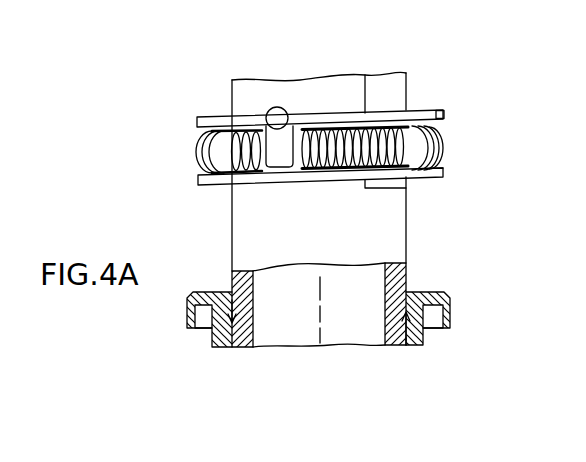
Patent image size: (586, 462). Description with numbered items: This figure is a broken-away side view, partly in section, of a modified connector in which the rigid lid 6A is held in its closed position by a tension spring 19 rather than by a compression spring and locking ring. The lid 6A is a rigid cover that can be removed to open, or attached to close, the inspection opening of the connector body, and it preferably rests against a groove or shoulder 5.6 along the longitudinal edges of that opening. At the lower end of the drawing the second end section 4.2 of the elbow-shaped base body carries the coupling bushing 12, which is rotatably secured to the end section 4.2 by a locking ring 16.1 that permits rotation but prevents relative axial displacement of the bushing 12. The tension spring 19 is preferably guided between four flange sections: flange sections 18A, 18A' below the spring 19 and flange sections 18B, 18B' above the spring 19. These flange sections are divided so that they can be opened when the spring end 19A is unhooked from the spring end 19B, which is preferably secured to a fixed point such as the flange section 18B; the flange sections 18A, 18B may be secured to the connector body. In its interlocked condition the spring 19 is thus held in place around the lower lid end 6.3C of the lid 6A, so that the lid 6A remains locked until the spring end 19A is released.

The second end section 4.2 is at (366, 257).
The groove or shoulder 5.6 is at (370, 103).
The lid 6A is at (373, 84).
The lower lid end 6.3C is at (390, 187).
The coupling bushing 12 is at (430, 340).
The locking ring 16.1 is at (402, 343).
The flange section 18A is at (309, 195).
The flange section 18A' is at (467, 169).
The flange section 18B is at (305, 105).
The flange section 18B' is at (475, 112).
The tension spring 19 is at (446, 140).
The spring end 19A is at (271, 150).
The spring end 19B is at (287, 108).